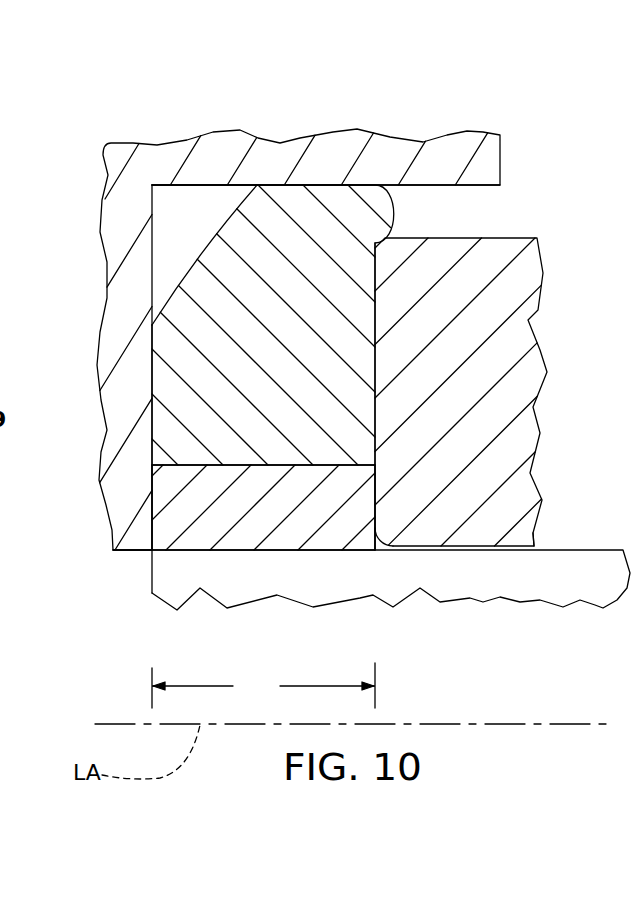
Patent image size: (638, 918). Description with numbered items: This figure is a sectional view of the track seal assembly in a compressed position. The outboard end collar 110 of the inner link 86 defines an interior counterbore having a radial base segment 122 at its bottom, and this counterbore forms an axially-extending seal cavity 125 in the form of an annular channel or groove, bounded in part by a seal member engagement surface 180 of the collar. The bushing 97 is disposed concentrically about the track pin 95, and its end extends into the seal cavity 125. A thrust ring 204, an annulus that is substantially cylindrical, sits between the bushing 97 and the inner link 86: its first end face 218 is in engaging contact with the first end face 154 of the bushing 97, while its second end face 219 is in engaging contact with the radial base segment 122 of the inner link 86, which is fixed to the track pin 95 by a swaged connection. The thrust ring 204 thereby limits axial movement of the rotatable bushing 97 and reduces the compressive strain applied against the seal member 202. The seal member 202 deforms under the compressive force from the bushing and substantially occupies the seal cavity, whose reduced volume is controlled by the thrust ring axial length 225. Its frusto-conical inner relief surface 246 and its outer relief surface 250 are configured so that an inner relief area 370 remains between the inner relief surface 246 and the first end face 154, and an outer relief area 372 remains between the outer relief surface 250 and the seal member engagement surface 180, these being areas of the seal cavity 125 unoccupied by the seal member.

The inner link 86 is at (120, 153).
The outboard end collar 110 is at (215, 155).
The axially-extending seal cavity 125 is at (195, 198).
The seal member engagement surface 180 is at (168, 220).
The outer relief area 372 is at (170, 235).
The outer relief surface 250 is at (186, 263).
The radial base segment 122 is at (150, 297).
The inner relief area 370 is at (377, 462).
The second end face 219 is at (150, 502).
The seal member 202 is at (197, 448).
The thrust ring 204 is at (223, 517).
The first end face 154 is at (377, 488).
The first end face 218 is at (377, 488).
The frusto-conical inner relief surface 246 is at (385, 470).
The track pin 95 is at (483, 577).
The bushing 97 is at (507, 517).
The thrust ring axial length 225 is at (263, 685).